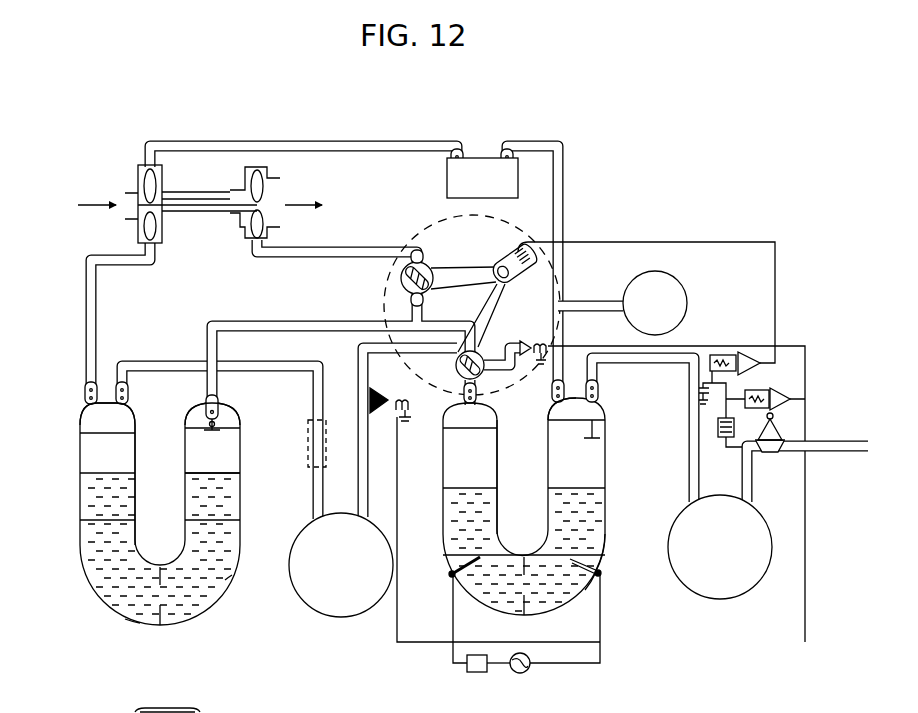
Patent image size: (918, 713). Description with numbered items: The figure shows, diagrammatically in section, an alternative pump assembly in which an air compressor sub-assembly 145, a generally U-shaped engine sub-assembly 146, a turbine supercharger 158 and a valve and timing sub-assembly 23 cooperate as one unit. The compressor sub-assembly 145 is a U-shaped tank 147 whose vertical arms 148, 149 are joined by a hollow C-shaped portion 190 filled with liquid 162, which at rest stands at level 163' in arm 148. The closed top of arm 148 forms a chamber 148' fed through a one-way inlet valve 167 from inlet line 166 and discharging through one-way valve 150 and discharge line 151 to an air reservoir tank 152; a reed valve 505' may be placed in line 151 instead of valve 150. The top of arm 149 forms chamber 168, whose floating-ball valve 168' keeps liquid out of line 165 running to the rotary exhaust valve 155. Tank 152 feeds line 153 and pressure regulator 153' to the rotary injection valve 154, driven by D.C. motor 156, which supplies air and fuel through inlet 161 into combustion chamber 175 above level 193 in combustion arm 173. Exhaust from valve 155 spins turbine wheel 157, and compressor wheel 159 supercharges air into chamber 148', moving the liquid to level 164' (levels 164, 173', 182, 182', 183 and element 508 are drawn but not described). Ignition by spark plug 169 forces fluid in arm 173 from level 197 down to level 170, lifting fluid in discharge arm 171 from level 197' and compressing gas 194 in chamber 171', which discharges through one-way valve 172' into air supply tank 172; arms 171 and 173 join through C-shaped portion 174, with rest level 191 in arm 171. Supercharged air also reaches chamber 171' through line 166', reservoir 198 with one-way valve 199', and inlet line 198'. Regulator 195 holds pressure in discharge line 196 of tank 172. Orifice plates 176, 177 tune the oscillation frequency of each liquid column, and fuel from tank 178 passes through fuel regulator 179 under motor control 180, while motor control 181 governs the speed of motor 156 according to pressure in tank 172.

The valve and timing sub-assembly 23 is at (540, 236).
The air compressor sub-assembly 145 is at (132, 627).
The U-shaped engine sub-assembly 146 is at (526, 624).
The U-shaped tank 147 is at (96, 598).
The arm 148 is at (139, 514).
The chamber 148' is at (131, 420).
The arm 149 is at (243, 524).
The one-way discharge valve 150 is at (128, 400).
The compressed air discharge line 151 is at (176, 362).
The air reservoir tank 152 is at (360, 571).
The line 153 is at (392, 432).
The pressure regulator 153' is at (485, 498).
The rotary injection valve 154 is at (460, 368).
The rotary exhaust valve 155 is at (430, 266).
The D.C. motor 156 is at (503, 252).
The turbine wheel 157 is at (268, 192).
The turbine supercharger 158 is at (207, 200).
The compressor wheel 159 is at (138, 186).
The inlet 161 is at (480, 398).
The liquid 162 is at (134, 598).
The level 163' is at (111, 463).
The inner U tube 164 is at (156, 495).
The level 164' is at (243, 408).
The line 165 is at (306, 303).
The inlet line 166 is at (97, 313).
The line 166' is at (303, 139).
The one-way inlet valve 167 is at (86, 396).
The chamber 168 is at (233, 393).
The valve 168' is at (247, 436).
The spark plug 169 is at (463, 393).
The level 170 is at (495, 548).
The discharge arm 171 is at (602, 514).
The chamber 171' is at (552, 420).
The air supply tank 172 is at (720, 547).
The one-way discharge valve 172' is at (640, 430).
The combustion chamber arm 173 is at (266, 489).
The partition 173' is at (185, 536).
The C-shaped hollow portion 174 is at (505, 613).
The combustion chamber 175 is at (446, 487).
The orifice plate 176 is at (166, 618).
The orifice plate 177 is at (560, 610).
The fuel tank 178 is at (622, 303).
The fuel regulator 179 is at (540, 343).
The motor control 180 is at (778, 392).
The motor control 181 is at (748, 351).
The electrode 182 is at (448, 610).
The electrode 182' is at (596, 609).
The control box 183 is at (468, 671).
The C-shaped portion 190 is at (226, 590).
The level 191 is at (598, 486).
The level 193 is at (455, 486).
The gas 194 is at (594, 467).
The regulator 195 is at (772, 456).
The discharge line 196 is at (806, 452).
The level 197 is at (451, 441).
The level 197' is at (629, 551).
The reservoir 198 is at (448, 178).
The inlet line 198' is at (563, 264).
The one-way valve 199' is at (447, 140).
The reed valve 505' is at (289, 452).
The base 508 is at (180, 710).